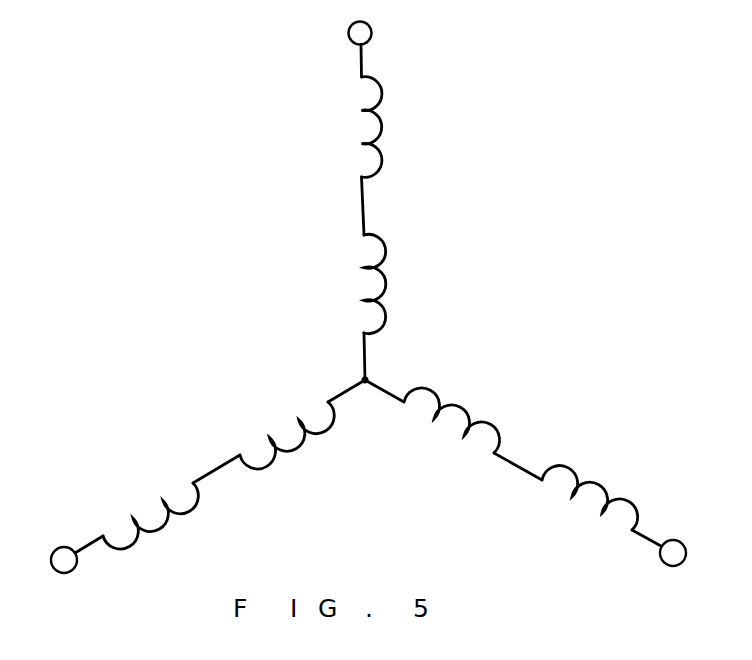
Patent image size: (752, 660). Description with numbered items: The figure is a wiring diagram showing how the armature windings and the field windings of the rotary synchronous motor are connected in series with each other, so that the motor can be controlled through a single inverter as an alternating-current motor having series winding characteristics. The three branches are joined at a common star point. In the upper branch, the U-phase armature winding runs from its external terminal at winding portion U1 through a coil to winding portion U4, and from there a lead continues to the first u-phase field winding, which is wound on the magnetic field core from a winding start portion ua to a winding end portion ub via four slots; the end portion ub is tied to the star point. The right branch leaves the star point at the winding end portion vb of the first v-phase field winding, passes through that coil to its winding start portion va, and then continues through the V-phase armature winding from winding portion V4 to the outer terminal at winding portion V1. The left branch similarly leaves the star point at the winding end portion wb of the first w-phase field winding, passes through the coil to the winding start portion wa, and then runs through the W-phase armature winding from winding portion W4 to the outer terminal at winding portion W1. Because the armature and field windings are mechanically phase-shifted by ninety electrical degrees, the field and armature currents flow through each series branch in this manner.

The U-phase winding portion U1 is at (371, 52).
The U-phase winding portion U4 is at (384, 133).
The winding start portion of first u-phase field winding ua is at (378, 209).
The winding end portion of first u-phase field winding ub is at (379, 307).
The winding end portion of first v-phase field winding vb is at (392, 383).
The winding start portion of first v-phase field winding va is at (473, 434).
The V-phase winding portion V4 is at (590, 482).
The V-phase winding portion V1 is at (659, 534).
The winding end portion of first w-phase field winding wb is at (346, 399).
The winding start portion of first w-phase field winding wa is at (263, 445).
The W-phase winding portion W4 is at (161, 516).
The W-phase winding portion W1 is at (80, 557).